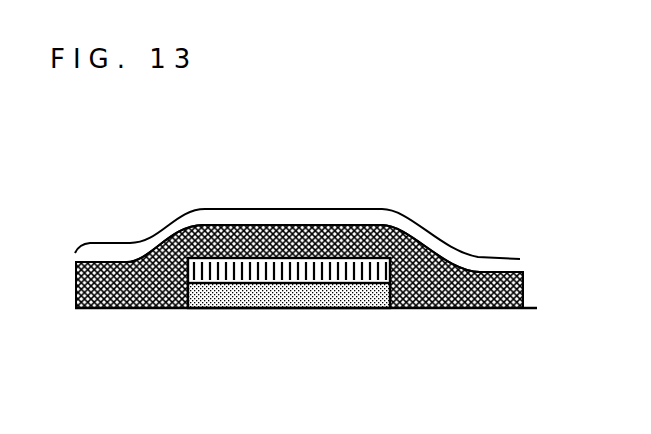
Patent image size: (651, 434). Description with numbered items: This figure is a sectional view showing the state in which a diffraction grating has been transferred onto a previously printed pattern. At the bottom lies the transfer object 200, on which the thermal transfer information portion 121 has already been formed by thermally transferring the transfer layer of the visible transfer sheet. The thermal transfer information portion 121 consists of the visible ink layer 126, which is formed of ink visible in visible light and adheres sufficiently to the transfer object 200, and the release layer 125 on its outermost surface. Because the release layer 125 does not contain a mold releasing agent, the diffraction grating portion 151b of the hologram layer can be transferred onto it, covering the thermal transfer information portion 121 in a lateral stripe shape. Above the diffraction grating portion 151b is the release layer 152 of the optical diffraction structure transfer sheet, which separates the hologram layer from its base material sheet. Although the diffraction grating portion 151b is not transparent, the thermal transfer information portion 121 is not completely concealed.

The thermal transfer information portion 121 is at (273, 256).
The release layer 125 is at (435, 273).
The visible ink layer 126 is at (392, 308).
The diffraction grating portion 151b is at (436, 247).
The release layer 152 is at (362, 220).
The transfer object 200 is at (108, 310).